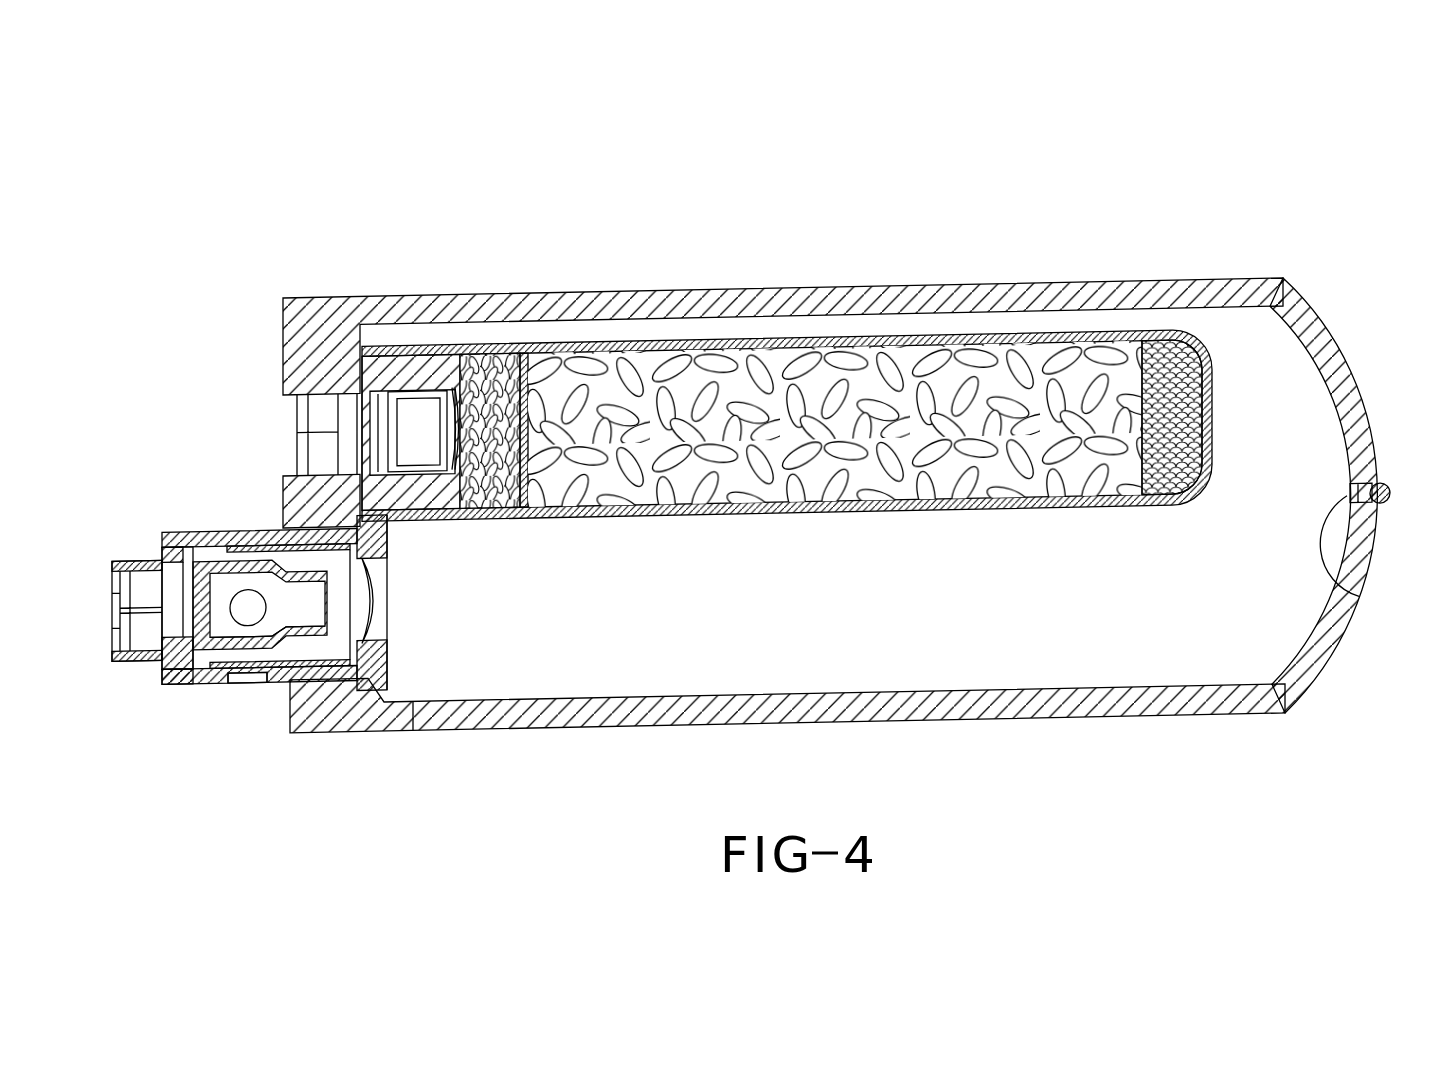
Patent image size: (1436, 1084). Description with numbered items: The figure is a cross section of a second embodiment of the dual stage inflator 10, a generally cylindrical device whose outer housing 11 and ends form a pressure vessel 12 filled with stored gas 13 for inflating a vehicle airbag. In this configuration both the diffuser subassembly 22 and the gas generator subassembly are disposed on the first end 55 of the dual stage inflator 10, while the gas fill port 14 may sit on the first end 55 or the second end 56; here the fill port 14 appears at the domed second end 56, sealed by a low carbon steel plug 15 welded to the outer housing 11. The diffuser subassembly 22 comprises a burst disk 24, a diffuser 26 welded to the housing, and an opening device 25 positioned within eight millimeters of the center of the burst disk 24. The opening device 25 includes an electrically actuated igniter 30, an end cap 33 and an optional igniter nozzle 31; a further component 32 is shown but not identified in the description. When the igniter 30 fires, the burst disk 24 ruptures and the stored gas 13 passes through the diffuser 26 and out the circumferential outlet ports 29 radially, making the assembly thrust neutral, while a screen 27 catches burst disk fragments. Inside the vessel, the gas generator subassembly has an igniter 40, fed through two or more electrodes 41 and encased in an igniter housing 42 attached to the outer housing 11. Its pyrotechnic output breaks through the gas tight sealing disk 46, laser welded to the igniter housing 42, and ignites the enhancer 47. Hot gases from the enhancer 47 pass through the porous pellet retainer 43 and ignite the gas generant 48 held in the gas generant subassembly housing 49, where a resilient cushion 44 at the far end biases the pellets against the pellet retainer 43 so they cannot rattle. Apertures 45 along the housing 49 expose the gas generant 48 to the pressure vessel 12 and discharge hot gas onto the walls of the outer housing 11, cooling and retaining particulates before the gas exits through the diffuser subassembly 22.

The dual stage inflator 10 is at (305, 230).
The outer housing 11 is at (958, 310).
The pressure vessel 12 is at (1130, 665).
The stored gas 13 is at (701, 596).
The gas fill port 14 is at (1360, 620).
The plug 15 is at (1385, 509).
The diffuser subassembly 22 is at (115, 527).
The burst disk 24 is at (368, 630).
The opening device 25 is at (165, 688).
The diffuser 26 is at (290, 532).
The screen 27 is at (312, 669).
The outlet ports 29 is at (252, 687).
The igniter 30 is at (200, 674).
The igniter nozzle 31 is at (237, 647).
The fitting 32 is at (118, 637).
The end cap 33 is at (168, 556).
The igniter 40 is at (375, 410).
The electrodes 41 is at (322, 441).
The igniter housing 42 is at (400, 380).
The pellet retainer 43 is at (553, 390).
The cushion 44 is at (1160, 398).
The apertures 45 is at (730, 527).
The sealing disk 46 is at (497, 454).
The enhancer 47 is at (500, 404).
The gas generant 48 is at (722, 441).
The gas generant subassembly housing 49 is at (453, 350).
The first end 55 is at (217, 302).
The second end 56 is at (1341, 319).